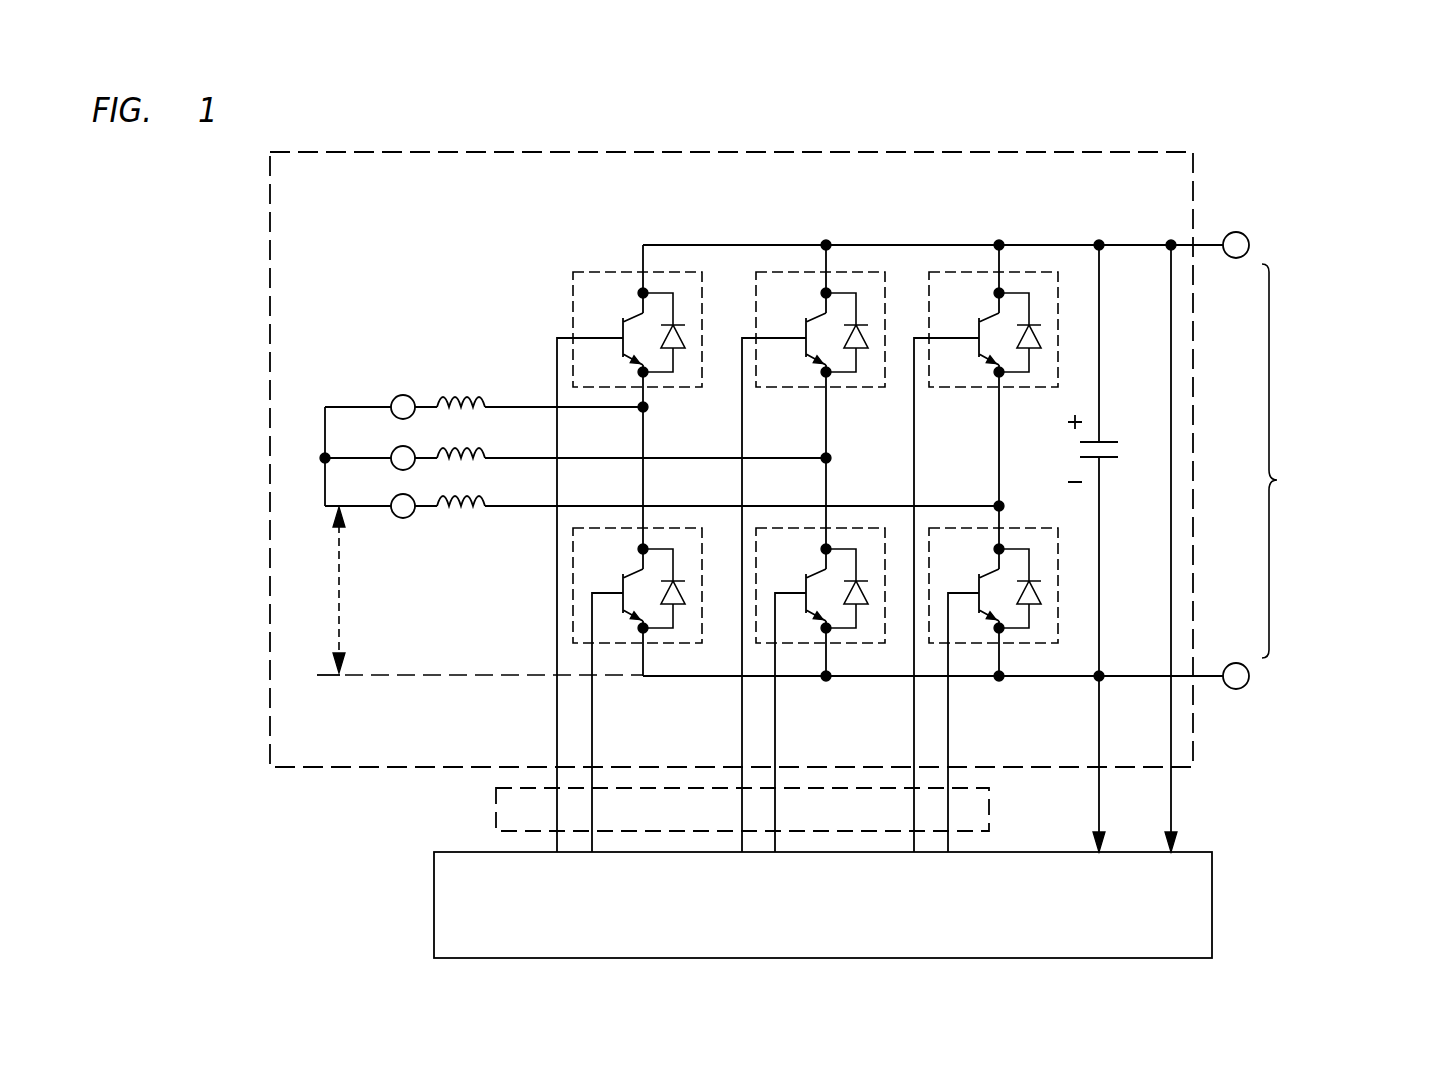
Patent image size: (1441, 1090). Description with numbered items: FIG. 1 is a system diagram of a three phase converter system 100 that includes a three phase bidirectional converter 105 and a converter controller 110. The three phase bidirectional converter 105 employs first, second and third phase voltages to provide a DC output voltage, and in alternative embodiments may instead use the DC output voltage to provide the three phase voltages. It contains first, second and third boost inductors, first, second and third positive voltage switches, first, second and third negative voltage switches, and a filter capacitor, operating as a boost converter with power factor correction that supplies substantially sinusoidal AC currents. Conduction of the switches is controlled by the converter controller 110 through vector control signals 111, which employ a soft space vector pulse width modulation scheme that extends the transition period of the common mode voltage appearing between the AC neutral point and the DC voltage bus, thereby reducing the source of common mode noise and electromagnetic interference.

The three phase converter system 100 is at (1333, 152).
The three phase bidirectional converter 105 is at (1194, 190).
The converter controller 110 is at (1212, 906).
The vector control signals 111 is at (496, 814).